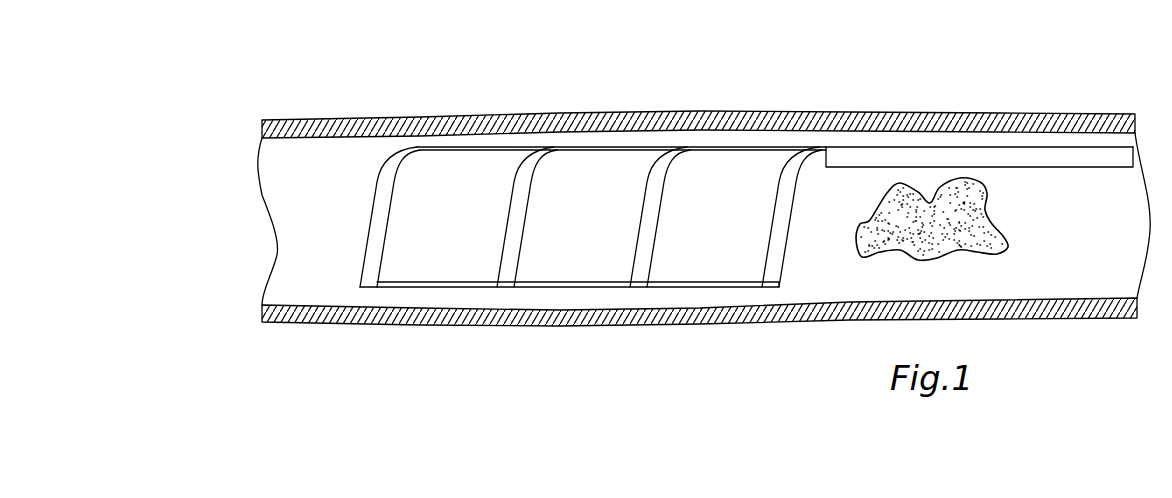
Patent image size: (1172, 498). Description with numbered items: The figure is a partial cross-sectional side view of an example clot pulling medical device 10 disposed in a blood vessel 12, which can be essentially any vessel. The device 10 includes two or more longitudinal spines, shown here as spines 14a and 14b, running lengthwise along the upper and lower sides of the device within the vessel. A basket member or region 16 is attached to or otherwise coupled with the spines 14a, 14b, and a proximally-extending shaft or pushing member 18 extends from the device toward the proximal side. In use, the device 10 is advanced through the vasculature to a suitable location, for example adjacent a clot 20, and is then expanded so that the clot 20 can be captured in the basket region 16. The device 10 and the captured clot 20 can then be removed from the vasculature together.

The clot pulling medical device 10 is at (382, 159).
The blood vessel 12 is at (730, 113).
The longitudinal spine 14a is at (606, 147).
The longitudinal spine 14b is at (562, 287).
The basket region 16 is at (357, 235).
The pushing member 18 is at (1065, 155).
The clot 20 is at (928, 204).